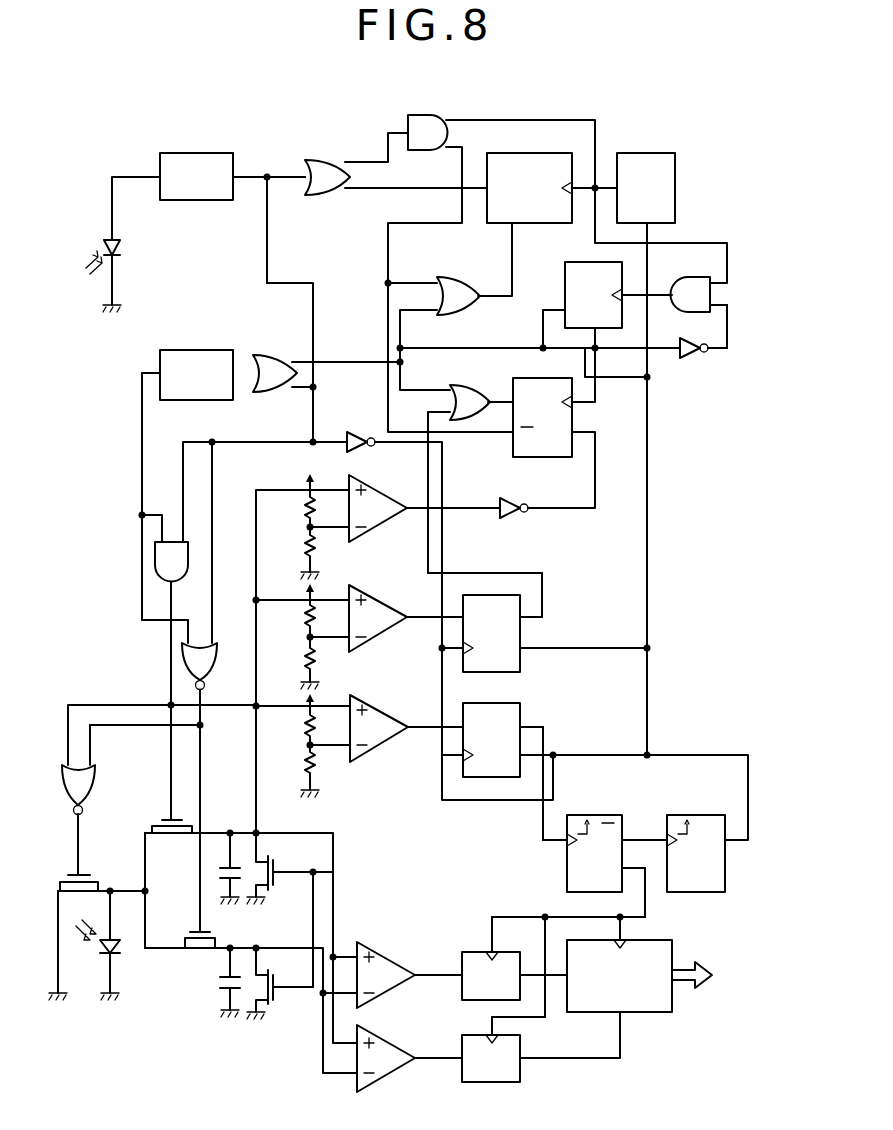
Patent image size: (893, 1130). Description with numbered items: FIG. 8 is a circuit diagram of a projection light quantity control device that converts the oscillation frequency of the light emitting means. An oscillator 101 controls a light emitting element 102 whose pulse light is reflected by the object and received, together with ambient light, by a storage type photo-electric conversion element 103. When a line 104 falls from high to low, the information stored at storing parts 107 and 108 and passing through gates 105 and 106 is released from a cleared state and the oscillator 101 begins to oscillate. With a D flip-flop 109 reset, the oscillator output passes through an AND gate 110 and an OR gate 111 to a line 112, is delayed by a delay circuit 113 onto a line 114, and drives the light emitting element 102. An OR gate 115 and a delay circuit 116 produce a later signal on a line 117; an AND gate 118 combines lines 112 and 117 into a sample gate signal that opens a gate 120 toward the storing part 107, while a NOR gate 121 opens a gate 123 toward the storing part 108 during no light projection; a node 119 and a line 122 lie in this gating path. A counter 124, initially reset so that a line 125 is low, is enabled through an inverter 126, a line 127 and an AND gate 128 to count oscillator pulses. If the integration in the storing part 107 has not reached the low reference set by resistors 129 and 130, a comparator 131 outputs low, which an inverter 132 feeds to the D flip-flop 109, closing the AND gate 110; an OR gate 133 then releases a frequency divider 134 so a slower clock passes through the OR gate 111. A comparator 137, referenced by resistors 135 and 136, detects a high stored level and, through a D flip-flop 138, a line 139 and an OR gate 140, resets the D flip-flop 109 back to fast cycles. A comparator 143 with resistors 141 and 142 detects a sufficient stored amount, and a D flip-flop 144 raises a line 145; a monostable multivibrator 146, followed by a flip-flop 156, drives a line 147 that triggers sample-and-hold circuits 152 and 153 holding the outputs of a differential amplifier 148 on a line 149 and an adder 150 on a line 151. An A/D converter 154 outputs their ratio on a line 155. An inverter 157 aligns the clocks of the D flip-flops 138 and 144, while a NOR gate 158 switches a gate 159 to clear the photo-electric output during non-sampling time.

The oscillator 101 is at (650, 153).
The light emitting element 102 is at (122, 253).
The photo-electric conversion element 103 is at (122, 950).
The line 104 is at (652, 688).
The gate 105 is at (276, 866).
The gate 106 is at (275, 1000).
The storing part 107 is at (224, 874).
The storing part 108 is at (221, 992).
The D flip-flop 109 is at (578, 411).
The AND gate 110 is at (422, 115).
The OR gate 111 is at (329, 160).
The line 112 is at (267, 174).
The delay circuit 113 is at (206, 153).
The line 114 is at (138, 177).
The OR gate 115 is at (274, 357).
The delay circuit 116 is at (180, 350).
The line 117 is at (137, 388).
The AND gate 118 is at (183, 580).
The NOR gate 119 is at (167, 703).
The gate 120 is at (178, 833).
The NOR gate 121 is at (217, 670).
The signal line 122 is at (204, 734).
The gate 123 is at (196, 950).
The counter 124 is at (565, 274).
The line 125 is at (658, 352).
The inverter 126 is at (685, 354).
The line 127 is at (727, 348).
The AND gate 128 is at (691, 277).
The resistor 129 is at (306, 506).
The resistor 130 is at (307, 552).
The comparator 131 is at (389, 527).
The inverter 132 is at (514, 513).
The OR gate 133 is at (455, 277).
The frequency divider 134 is at (520, 153).
The resistor 135 is at (306, 607).
The resistor 136 is at (305, 657).
The comparator 137 is at (384, 639).
The D flip-flop 138 is at (522, 665).
The line 139 is at (545, 590).
The OR gate 140 is at (458, 390).
The resistor 141 is at (306, 710).
The resistor 142 is at (306, 769).
The comparator 143 is at (389, 751).
The D flip-flop 144 is at (470, 777).
The line 145 is at (544, 732).
The monostable multivibrator 146 is at (567, 862).
The line 147 is at (648, 903).
The differential amplifier 148 is at (386, 946).
The line 149 is at (443, 972).
The adder 150 is at (388, 1033).
The line 151 is at (440, 1056).
The sample-and-hold circuit 152 is at (478, 1005).
The sample-and-hold circuit 153 is at (522, 1072).
The A/D converter 154 is at (645, 1014).
The line 155 is at (688, 980).
The flip-flop 156 is at (704, 894).
The inverter 157 is at (356, 432).
The NOR gate 158 is at (96, 780).
The gate 159 is at (84, 875).